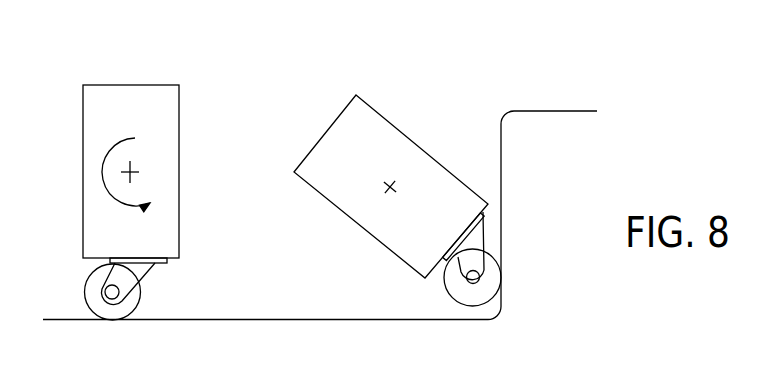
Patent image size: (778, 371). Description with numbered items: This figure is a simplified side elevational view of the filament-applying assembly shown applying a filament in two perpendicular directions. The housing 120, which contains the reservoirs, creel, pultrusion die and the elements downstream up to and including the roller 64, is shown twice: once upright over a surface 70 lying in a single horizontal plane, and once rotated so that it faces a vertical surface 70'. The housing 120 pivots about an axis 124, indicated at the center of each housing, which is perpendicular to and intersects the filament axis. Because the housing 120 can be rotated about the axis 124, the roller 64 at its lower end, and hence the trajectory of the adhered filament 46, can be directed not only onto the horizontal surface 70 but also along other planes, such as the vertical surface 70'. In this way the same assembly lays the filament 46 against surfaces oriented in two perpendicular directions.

The adhered filament 46 is at (53, 309).
The roller 64 is at (95, 303).
The surface 70 is at (265, 337).
The vertical surface 70' is at (542, 215).
The housing 120 is at (180, 105).
The axis 124 is at (133, 170).